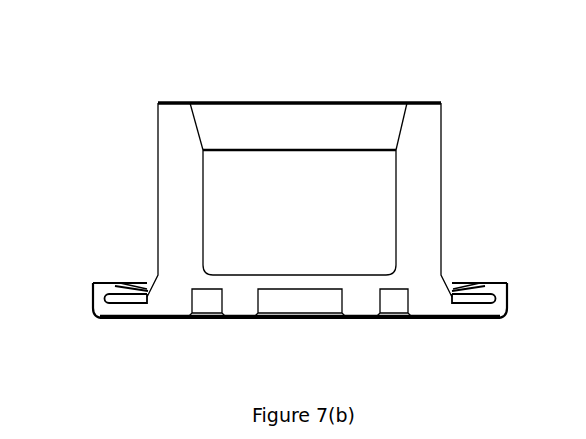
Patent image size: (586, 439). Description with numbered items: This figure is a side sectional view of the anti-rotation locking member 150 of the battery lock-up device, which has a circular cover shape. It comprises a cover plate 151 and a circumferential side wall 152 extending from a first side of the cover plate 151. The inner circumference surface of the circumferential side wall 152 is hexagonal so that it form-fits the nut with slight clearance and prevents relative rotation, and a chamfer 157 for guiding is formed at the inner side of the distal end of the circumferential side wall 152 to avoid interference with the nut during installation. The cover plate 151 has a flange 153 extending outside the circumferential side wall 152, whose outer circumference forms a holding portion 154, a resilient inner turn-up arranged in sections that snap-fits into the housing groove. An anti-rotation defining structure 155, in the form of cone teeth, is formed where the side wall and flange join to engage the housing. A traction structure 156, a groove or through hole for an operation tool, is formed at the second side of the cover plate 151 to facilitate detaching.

The anti-rotation locking member 150 is at (299, 147).
The cover plate 151 is at (447, 312).
The circumferential side wall 152 is at (415, 173).
The flange 153 is at (127, 308).
The holding portion 154 is at (127, 285).
The anti-rotation defining structure 155 is at (440, 290).
The traction structure 156 is at (300, 300).
The chamfer 157 is at (198, 128).